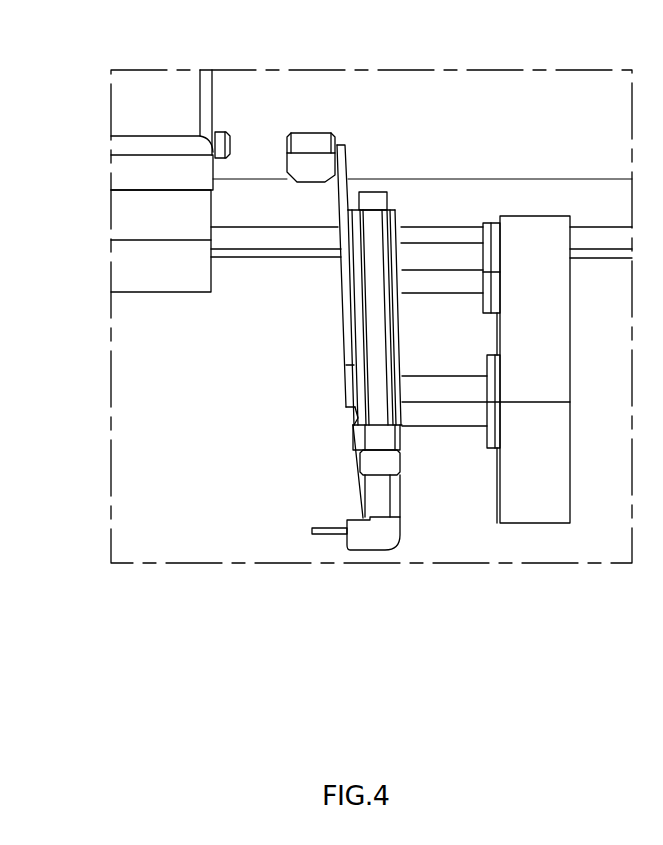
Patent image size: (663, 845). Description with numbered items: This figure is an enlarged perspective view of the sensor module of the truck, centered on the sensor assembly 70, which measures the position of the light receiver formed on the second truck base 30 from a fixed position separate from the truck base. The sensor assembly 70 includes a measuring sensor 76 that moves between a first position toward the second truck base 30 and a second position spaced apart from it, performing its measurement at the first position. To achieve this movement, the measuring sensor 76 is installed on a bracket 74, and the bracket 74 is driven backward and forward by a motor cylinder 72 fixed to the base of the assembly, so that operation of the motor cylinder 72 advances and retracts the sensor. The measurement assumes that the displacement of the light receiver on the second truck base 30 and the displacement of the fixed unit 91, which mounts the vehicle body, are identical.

The second truck base 30 is at (125, 104).
The sensor assembly 70 is at (300, 406).
The motor cylinder 72 is at (378, 492).
The bracket 74 is at (372, 326).
The measuring sensor 76 is at (313, 140).
The fixed unit 91 is at (222, 143).